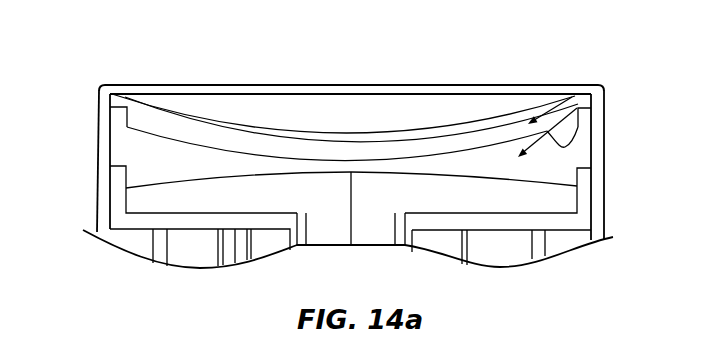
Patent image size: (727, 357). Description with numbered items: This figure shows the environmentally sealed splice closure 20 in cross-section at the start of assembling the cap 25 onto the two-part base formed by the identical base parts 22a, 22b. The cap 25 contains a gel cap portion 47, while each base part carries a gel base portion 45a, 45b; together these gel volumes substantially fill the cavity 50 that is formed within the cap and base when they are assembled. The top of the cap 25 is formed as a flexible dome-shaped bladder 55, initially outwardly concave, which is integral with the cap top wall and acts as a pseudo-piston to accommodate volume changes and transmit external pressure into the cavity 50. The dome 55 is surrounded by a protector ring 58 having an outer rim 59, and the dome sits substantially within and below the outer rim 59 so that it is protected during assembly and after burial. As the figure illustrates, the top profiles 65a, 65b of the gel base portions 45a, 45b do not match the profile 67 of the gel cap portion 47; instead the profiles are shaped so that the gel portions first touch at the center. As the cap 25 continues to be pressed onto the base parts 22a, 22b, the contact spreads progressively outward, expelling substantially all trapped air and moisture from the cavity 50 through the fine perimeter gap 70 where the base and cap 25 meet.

The splice closure 20 is at (124, 64).
The protector ring 58 is at (238, 85).
The outer rim 59 is at (318, 85).
The dome-shaped bladder 55 is at (447, 132).
The cavity 50 is at (488, 182).
The gel cap portion 47 is at (558, 118).
The cap 25 is at (610, 122).
The profile of gel cap portion 67 is at (591, 136).
The top profile of gel base portion 65a is at (167, 181).
The top profile of gel base portion 65b is at (543, 184).
The base part 22a is at (130, 233).
The base part 22b is at (518, 240).
The gel base portion 45a is at (200, 205).
The gel base portion 45b is at (450, 195).
The perimeter gap 70 is at (588, 241).